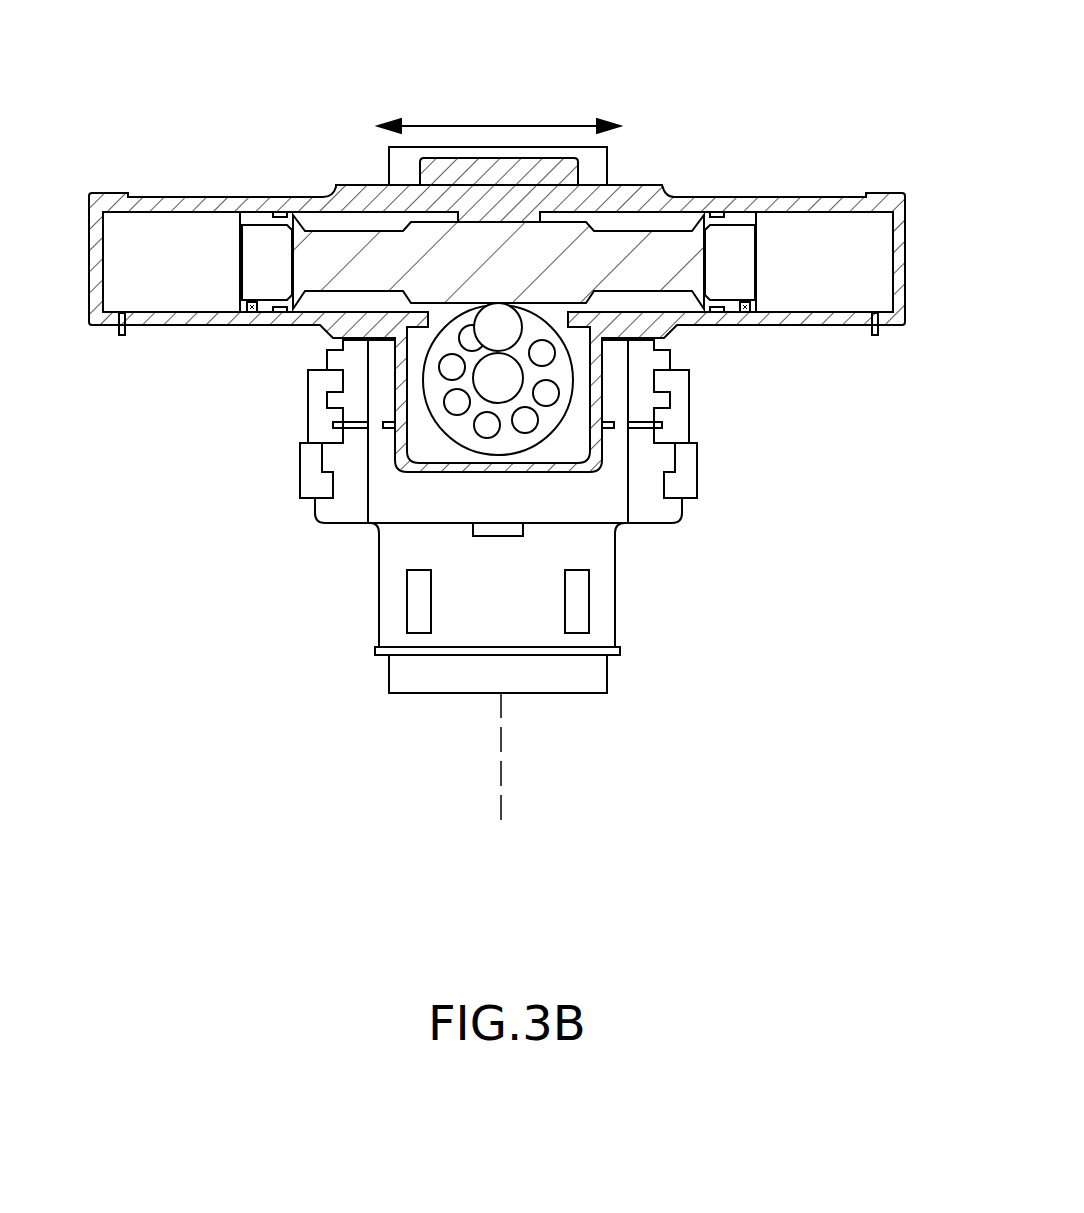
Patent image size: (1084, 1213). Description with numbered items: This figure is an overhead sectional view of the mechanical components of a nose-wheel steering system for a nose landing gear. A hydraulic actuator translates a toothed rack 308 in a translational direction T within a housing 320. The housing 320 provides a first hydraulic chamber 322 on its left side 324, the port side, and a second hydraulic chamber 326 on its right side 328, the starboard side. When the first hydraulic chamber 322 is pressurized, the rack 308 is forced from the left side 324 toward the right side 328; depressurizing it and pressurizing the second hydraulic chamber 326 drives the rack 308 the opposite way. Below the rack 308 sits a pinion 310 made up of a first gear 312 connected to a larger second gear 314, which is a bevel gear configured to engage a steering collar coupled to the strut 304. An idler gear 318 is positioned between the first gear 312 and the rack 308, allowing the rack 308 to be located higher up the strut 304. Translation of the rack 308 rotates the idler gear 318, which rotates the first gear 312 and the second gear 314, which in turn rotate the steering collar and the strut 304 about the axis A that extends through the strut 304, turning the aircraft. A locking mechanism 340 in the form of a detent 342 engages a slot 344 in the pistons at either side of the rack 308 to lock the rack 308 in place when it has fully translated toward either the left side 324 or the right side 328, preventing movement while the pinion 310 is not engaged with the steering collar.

The strut 304 is at (593, 672).
The rack 308 is at (677, 277).
The pinion 310 is at (555, 413).
The first gear 312 is at (488, 397).
The second gear 314 is at (543, 422).
The idler gear 318 is at (498, 316).
The housing 320 is at (787, 203).
The first hydraulic chamber 322 is at (872, 250).
The left side 324 is at (898, 296).
The second hydraulic chamber 326 is at (167, 230).
The right side 328 is at (95, 292).
The locking mechanism 340 is at (127, 327).
The detent 342 is at (122, 335).
The slot 344 is at (252, 312).
The axis A is at (501, 744).
The translational direction T is at (555, 126).